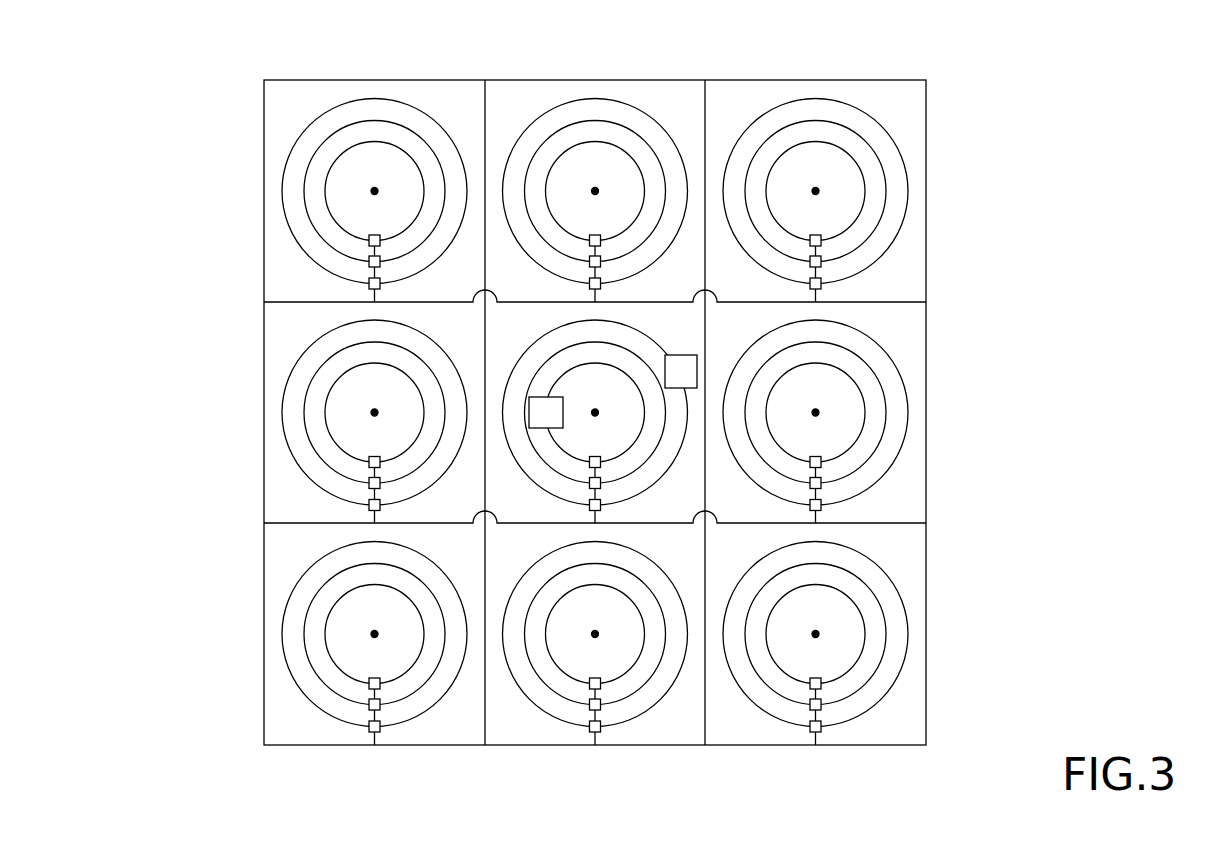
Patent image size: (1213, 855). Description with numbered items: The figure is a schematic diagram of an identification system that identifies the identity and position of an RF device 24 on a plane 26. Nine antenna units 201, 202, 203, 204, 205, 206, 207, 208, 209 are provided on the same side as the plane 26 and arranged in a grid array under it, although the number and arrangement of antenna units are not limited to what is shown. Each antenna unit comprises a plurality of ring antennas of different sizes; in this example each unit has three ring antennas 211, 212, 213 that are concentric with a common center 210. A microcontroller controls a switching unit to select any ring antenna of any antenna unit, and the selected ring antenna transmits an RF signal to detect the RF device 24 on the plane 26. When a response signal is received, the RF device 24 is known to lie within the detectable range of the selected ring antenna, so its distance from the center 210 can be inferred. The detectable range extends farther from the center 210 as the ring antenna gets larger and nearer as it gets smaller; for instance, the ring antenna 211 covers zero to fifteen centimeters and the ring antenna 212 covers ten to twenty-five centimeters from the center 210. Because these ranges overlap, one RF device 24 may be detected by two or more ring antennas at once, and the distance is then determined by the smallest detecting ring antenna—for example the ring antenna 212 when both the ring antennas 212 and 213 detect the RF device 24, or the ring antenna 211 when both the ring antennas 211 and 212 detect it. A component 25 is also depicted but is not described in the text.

The plane 26 is at (928, 208).
The RF device 24 is at (599, 415).
The switching element 25 is at (533, 397).
The antenna unit 201 is at (302, 103).
The antenna unit 202 is at (537, 102).
The antenna unit 203 is at (750, 97).
The antenna unit 204 is at (278, 473).
The antenna unit 205 is at (599, 560).
The antenna unit 206 is at (912, 354).
The antenna unit 207 is at (280, 722).
The antenna unit 208 is at (677, 730).
The antenna unit 209 is at (912, 573).
The center 210 is at (595, 410).
The ring antenna 211 is at (642, 426).
The ring antenna 212 is at (665, 365).
The ring antenna 213 is at (668, 452).